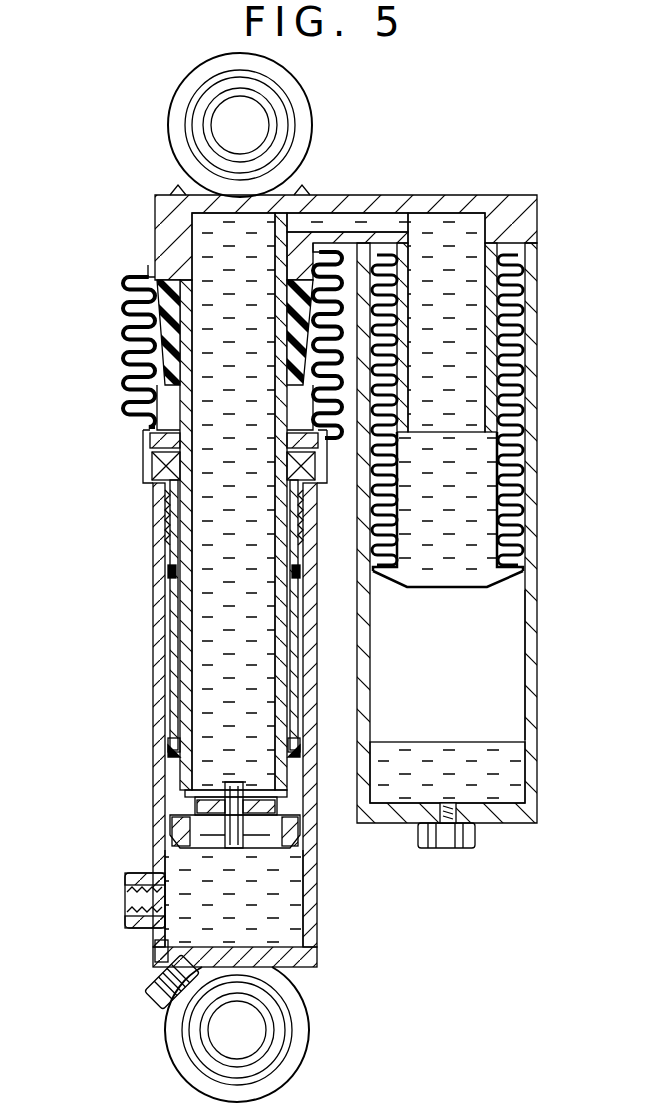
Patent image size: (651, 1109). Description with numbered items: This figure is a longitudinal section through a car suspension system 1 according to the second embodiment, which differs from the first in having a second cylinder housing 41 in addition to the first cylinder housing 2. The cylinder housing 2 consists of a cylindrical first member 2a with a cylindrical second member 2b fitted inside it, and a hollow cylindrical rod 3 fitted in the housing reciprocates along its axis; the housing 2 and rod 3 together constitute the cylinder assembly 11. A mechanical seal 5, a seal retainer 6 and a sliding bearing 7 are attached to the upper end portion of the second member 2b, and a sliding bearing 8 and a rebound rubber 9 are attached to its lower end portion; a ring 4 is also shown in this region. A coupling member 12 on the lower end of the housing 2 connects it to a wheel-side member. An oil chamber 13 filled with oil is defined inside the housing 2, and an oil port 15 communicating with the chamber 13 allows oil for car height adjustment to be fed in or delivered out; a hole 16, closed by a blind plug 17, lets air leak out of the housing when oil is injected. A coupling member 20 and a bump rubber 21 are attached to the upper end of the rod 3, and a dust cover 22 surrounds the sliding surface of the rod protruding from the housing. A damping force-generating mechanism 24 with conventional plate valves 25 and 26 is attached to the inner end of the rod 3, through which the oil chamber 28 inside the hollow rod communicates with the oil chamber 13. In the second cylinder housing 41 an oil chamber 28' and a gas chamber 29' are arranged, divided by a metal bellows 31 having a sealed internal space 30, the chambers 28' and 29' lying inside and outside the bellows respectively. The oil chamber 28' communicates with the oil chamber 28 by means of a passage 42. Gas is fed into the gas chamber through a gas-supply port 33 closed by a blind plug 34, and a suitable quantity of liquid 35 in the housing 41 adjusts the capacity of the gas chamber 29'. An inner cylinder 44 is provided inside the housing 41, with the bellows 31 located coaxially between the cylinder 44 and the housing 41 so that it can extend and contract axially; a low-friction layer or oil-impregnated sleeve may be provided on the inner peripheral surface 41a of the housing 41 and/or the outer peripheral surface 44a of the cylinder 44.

The car suspension system 1 is at (460, 106).
The cylinder housing 2 is at (135, 658).
The first member 2a is at (160, 626).
The second member 2b is at (170, 600).
The rod 3 is at (155, 406).
The stop ring 4 is at (168, 570).
The mechanical seal 5 is at (150, 468).
The seal retainer 6 is at (150, 440).
The sliding bearing 7 is at (166, 512).
The sliding bearing 8 is at (170, 718).
The rebound rubber 9 is at (172, 745).
The cylinder assembly 11 is at (135, 843).
The coupling member 12 is at (310, 1030).
The oil chamber 13 is at (290, 925).
The oil port 15 is at (127, 905).
The hole 16 is at (160, 946).
The blind plug 17 is at (158, 985).
The coupling member 20 is at (168, 132).
The bump rubber 21 is at (165, 372).
The dust cover 22 is at (123, 318).
The damping force-generating mechanism 24 is at (200, 793).
The plate valve 25 is at (268, 793).
The plate valve 26 is at (282, 838).
The oil chamber 28 is at (184, 501).
The oil chamber 28' is at (496, 343).
The gas chamber 29' is at (483, 666).
The sealed internal space 30 is at (447, 590).
The metal bellows 31 is at (525, 510).
The gas-supply port 33 is at (470, 824).
The blind plug 34 is at (450, 850).
The liquid 35 is at (515, 760).
The second cylinder housing 41 is at (532, 548).
The inner peripheral surface 41a is at (522, 632).
The passage 42 is at (372, 216).
The inner cylinder 44 is at (525, 334).
The outer peripheral surface 44a is at (525, 400).